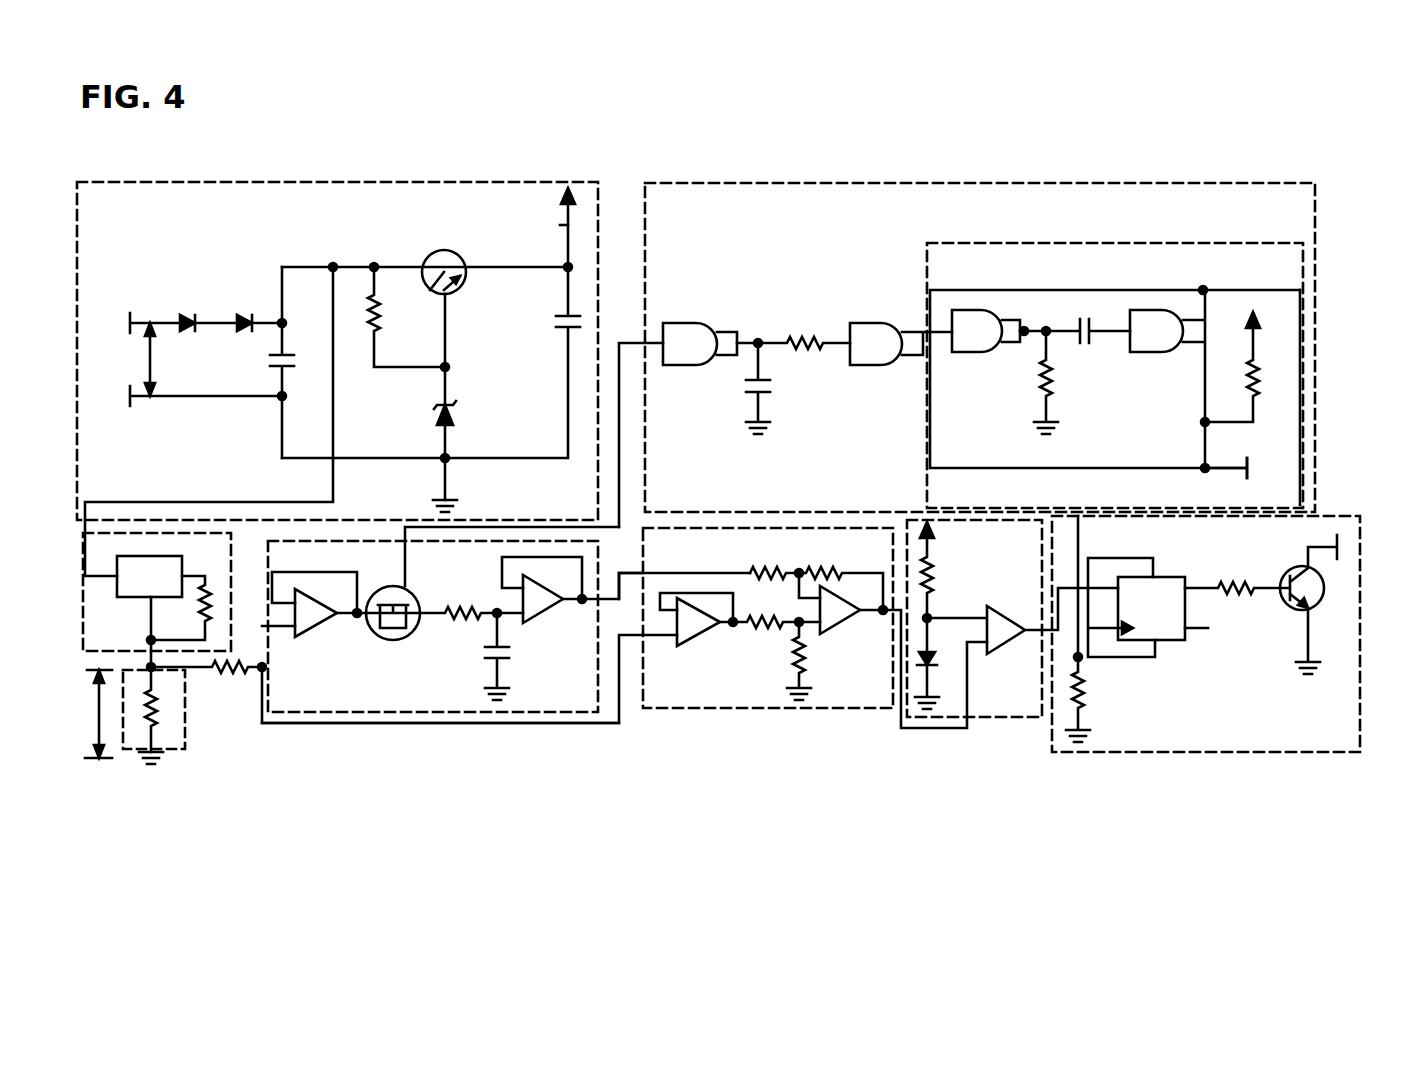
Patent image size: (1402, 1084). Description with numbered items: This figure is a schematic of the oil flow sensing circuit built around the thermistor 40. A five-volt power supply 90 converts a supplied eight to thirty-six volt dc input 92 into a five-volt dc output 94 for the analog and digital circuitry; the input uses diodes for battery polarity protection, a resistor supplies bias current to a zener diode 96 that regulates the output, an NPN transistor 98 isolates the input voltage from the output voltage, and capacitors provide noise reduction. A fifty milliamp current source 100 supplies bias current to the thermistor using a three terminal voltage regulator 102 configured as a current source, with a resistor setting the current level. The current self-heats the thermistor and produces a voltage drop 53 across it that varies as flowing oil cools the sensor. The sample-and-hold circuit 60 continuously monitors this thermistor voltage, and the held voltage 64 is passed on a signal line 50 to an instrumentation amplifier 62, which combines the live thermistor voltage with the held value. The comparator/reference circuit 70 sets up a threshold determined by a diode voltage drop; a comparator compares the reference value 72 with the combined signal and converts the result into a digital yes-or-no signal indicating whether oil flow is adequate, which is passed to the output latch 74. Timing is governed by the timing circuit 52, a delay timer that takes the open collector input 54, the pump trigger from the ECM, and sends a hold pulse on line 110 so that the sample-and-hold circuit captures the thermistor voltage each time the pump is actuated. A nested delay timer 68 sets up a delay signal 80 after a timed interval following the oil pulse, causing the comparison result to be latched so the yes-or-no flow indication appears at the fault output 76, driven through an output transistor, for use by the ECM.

The thermistor 40 is at (186, 722).
The sample-and-hold circuit 50 is at (608, 710).
The timing circuit 52 is at (998, 461).
The voltage drop 53 is at (96, 712).
The open collector input 54 is at (1232, 470).
The sample-and-hold circuit 60 is at (418, 714).
The instrumentation amplifier 62 is at (737, 712).
The held voltage 64 is at (634, 574).
The delay timer 68 is at (1076, 461).
The comparator/reference circuit 70 is at (1012, 655).
The reference value 72 is at (935, 652).
The output latch 74 is at (1222, 649).
The fault output 76 is at (1322, 545).
The delay signal 80 is at (1316, 440).
The 5-volt power supply 90 is at (337, 353).
The dc input 92 is at (148, 362).
The 5-volt dc output 94 is at (566, 230).
The zener diode 96 is at (452, 410).
The NPN transistor 98 is at (460, 290).
The current source 100 is at (133, 600).
The three terminal voltage regulator 102 is at (140, 598).
The hold pulse 110 is at (621, 455).